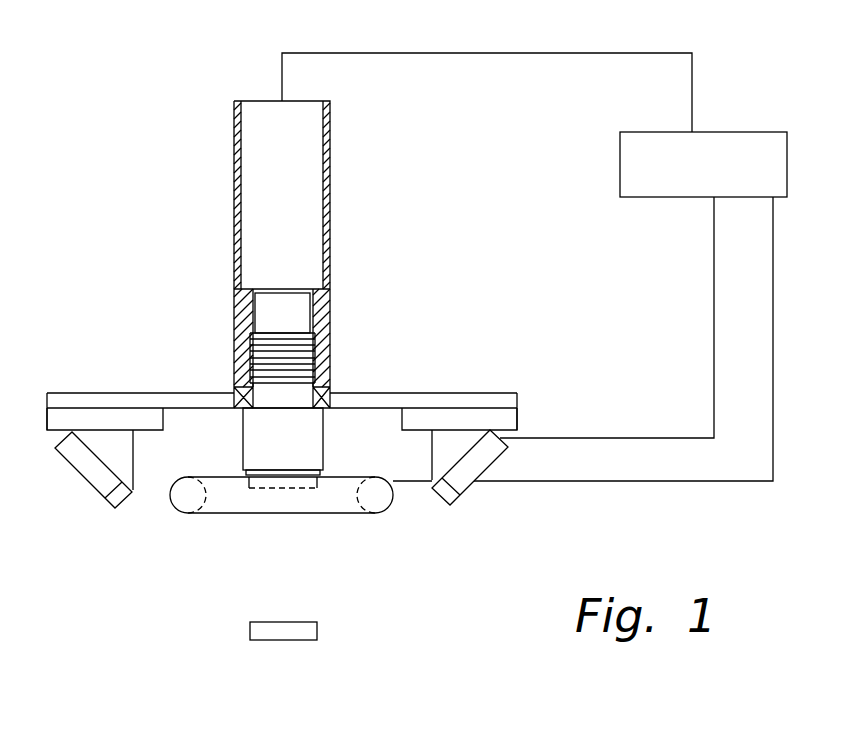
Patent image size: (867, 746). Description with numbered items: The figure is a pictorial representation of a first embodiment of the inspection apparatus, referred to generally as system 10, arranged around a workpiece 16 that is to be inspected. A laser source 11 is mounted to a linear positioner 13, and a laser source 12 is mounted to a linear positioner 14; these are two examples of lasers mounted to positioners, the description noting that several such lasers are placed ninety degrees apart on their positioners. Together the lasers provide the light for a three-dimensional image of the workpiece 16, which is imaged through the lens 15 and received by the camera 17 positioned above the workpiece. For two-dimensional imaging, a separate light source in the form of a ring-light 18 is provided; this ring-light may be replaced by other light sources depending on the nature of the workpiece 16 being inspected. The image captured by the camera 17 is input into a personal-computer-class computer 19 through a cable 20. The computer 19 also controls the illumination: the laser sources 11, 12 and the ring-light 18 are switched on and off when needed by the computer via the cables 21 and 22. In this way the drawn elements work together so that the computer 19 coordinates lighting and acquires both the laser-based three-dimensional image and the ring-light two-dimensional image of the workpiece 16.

The system 10 is at (138, 64).
The laser source 11 is at (85, 482).
The laser source 12 is at (460, 500).
The linear positioner 13 is at (147, 393).
The linear positioner 14 is at (446, 393).
The lens 15 is at (313, 360).
The workpiece 16 is at (298, 640).
The camera 17 is at (234, 163).
The ring-light 18 is at (313, 513).
The personal computer 19 is at (740, 132).
The cable 20 is at (483, 53).
The cable 21 is at (714, 312).
The cable 22 is at (773, 310).